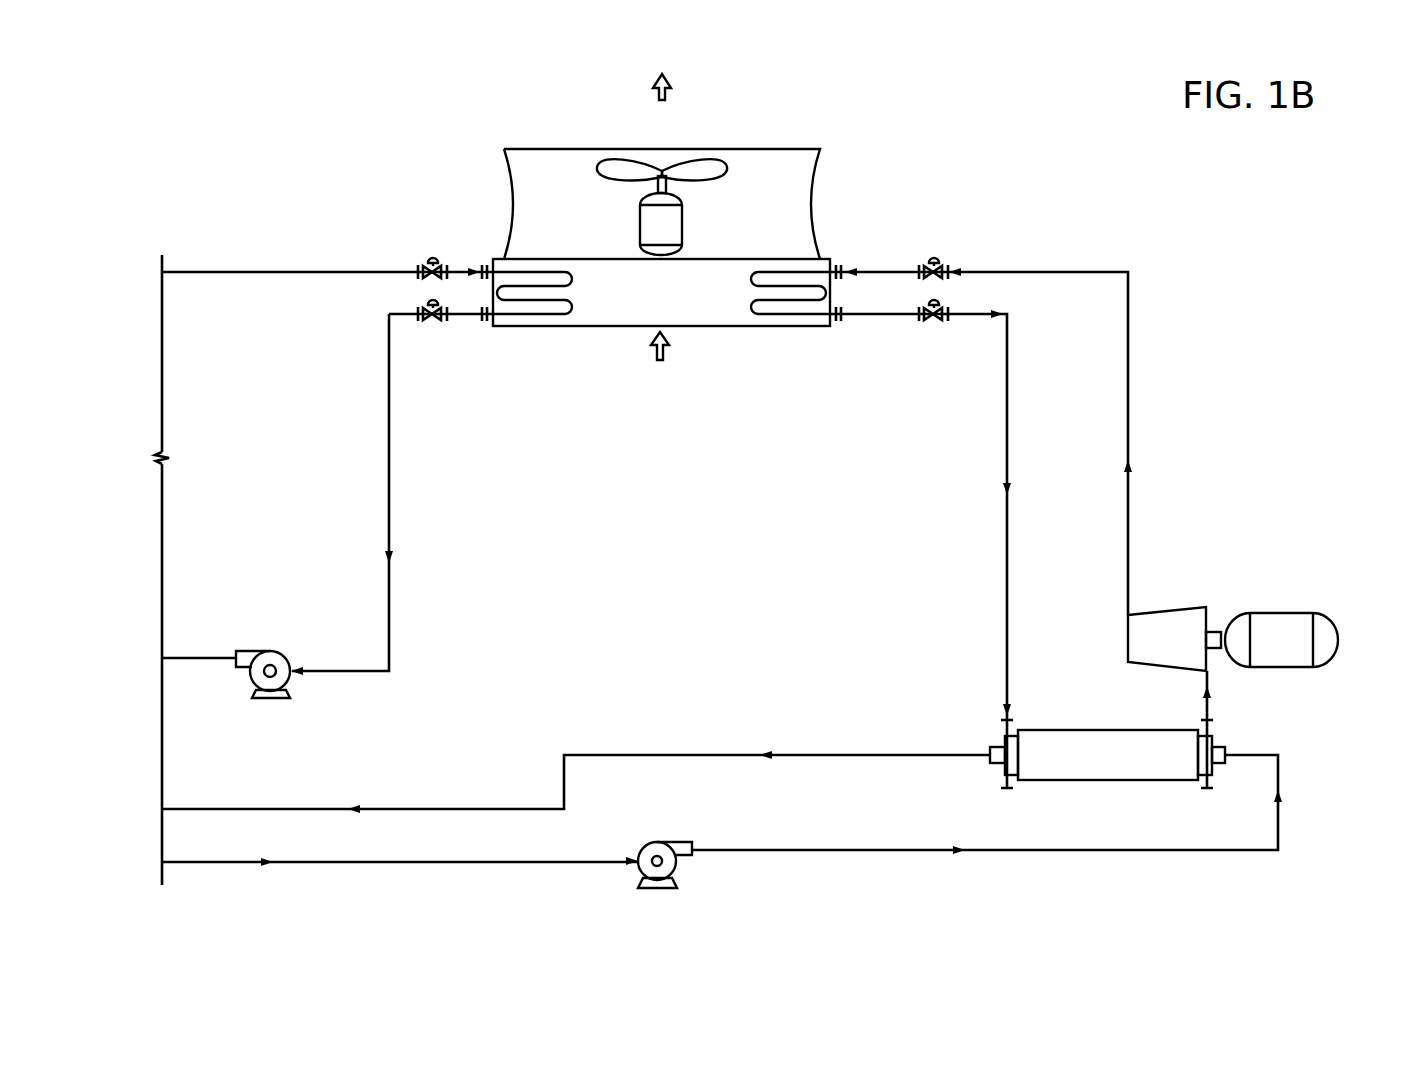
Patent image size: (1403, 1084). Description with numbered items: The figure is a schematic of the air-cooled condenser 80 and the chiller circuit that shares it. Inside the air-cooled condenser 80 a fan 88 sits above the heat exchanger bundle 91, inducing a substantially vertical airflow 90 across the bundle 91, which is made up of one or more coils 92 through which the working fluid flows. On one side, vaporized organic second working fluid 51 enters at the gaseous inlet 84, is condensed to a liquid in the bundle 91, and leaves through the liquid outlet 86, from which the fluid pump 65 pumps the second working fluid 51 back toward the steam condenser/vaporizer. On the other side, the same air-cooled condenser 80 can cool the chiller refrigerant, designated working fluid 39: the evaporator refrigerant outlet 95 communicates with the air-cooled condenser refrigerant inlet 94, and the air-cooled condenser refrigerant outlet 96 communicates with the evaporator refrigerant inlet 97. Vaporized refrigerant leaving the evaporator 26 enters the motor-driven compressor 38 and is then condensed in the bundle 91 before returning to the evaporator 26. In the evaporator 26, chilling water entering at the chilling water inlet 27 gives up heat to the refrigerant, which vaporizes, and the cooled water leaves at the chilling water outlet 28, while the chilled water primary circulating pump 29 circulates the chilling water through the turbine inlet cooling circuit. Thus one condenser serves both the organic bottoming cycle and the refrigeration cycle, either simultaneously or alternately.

The air-cooled condenser 80 is at (813, 124).
The fan 88 is at (712, 176).
The air flow 90 is at (655, 352).
The bundle 91 is at (738, 305).
The coil 92 is at (775, 309).
The gaseous inlet 84 is at (482, 264).
The liquid outlet 86 is at (482, 322).
The air-cooled condenser refrigerant inlet 94 is at (840, 263).
The air-cooled condenser refrigerant outlet 96 is at (840, 323).
The working fluid 39 is at (1128, 515).
The compressor 38 is at (1128, 635).
The second working fluid 51 is at (389, 600).
The fluid pump 65 is at (268, 651).
The evaporator 26 is at (1128, 782).
The chilling water inlet 27 is at (1228, 752).
The chilling water outlet 28 is at (988, 758).
The chilled water primary circulating pump 29 is at (677, 866).
The evaporator refrigerant outlet 95 is at (1203, 722).
The evaporator refrigerant inlet 97 is at (1003, 720).